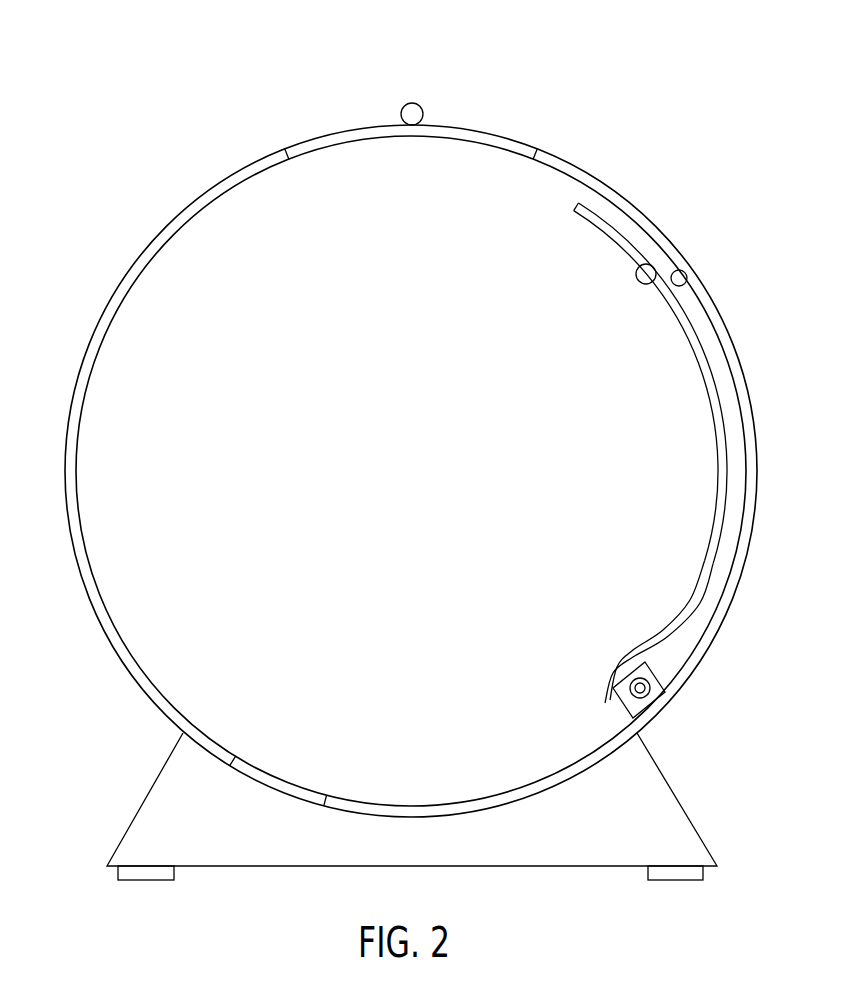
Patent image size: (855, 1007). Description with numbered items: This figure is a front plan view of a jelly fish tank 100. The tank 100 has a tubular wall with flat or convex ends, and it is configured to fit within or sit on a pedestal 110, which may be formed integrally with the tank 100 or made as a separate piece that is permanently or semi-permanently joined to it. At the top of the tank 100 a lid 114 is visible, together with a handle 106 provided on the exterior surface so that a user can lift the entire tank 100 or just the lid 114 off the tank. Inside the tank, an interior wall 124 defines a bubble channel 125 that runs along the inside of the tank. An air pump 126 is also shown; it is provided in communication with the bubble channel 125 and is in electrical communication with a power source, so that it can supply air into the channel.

The tank 100 is at (603, 88).
The handle 106 is at (412, 103).
The pedestal 110 is at (650, 803).
The lid 114 is at (497, 140).
The interior wall 124 is at (640, 264).
The bubble channel 125 is at (684, 285).
The air pump 126 is at (645, 691).